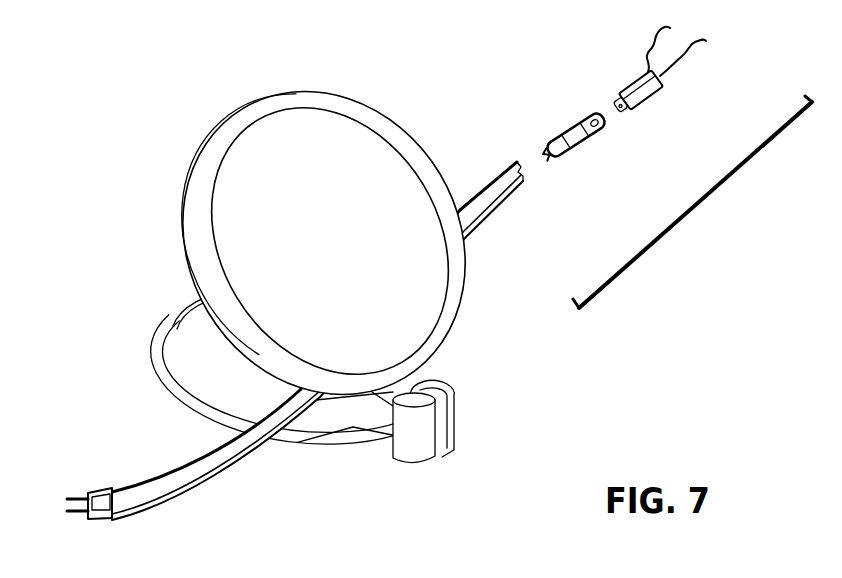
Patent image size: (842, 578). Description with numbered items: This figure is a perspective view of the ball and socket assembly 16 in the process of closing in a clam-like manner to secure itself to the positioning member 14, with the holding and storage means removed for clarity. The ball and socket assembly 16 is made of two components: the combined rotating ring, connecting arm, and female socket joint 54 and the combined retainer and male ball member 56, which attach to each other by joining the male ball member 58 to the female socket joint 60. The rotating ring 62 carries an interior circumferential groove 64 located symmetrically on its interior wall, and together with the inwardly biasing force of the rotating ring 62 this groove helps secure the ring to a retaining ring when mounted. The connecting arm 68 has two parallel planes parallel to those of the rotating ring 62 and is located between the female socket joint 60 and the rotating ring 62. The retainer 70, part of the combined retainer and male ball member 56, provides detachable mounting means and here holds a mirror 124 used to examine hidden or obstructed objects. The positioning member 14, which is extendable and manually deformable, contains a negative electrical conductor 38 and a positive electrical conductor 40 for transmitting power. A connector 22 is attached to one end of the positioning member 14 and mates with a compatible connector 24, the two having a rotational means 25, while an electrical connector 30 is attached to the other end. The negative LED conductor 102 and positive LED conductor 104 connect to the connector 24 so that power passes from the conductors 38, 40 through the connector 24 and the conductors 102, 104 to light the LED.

The positioning member 14 is at (222, 480).
The ball and socket assembly 16 is at (297, 243).
The connector 22 is at (578, 121).
The connector 24 is at (628, 85).
The rotational means 25 is at (590, 123).
The electrical connector 30 is at (97, 498).
The negative electrical conductor 38 is at (84, 498).
The positive electrical conductor 40 is at (84, 514).
The combined rotating ring, connecting arm, and female socket joint 54 is at (188, 412).
The combined retainer and male ball member 56 is at (187, 174).
The male ball member 58 is at (454, 426).
The female socket joint 60 is at (448, 446).
The rotating ring 62 is at (158, 346).
The interior circumferential groove 64 is at (184, 292).
The connecting arm 68 is at (387, 438).
The retainer 70 is at (452, 268).
The negative LED conductor 102 is at (689, 71).
The positive LED conductor 104 is at (648, 43).
The mirror 124 is at (374, 290).